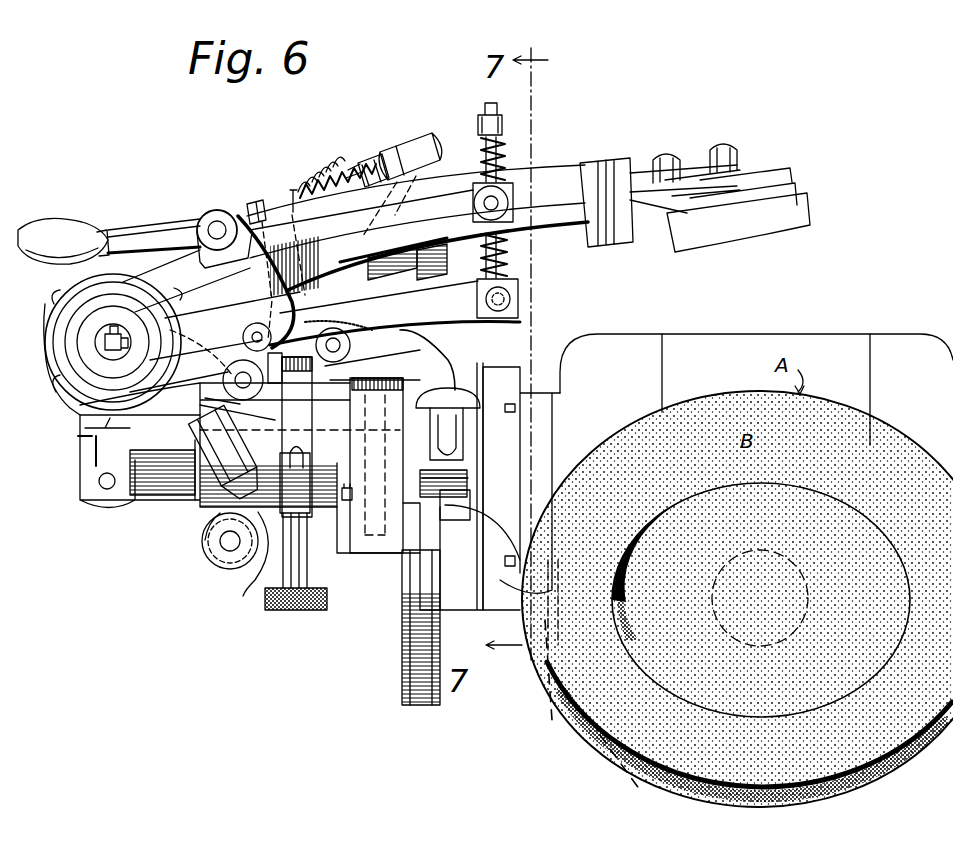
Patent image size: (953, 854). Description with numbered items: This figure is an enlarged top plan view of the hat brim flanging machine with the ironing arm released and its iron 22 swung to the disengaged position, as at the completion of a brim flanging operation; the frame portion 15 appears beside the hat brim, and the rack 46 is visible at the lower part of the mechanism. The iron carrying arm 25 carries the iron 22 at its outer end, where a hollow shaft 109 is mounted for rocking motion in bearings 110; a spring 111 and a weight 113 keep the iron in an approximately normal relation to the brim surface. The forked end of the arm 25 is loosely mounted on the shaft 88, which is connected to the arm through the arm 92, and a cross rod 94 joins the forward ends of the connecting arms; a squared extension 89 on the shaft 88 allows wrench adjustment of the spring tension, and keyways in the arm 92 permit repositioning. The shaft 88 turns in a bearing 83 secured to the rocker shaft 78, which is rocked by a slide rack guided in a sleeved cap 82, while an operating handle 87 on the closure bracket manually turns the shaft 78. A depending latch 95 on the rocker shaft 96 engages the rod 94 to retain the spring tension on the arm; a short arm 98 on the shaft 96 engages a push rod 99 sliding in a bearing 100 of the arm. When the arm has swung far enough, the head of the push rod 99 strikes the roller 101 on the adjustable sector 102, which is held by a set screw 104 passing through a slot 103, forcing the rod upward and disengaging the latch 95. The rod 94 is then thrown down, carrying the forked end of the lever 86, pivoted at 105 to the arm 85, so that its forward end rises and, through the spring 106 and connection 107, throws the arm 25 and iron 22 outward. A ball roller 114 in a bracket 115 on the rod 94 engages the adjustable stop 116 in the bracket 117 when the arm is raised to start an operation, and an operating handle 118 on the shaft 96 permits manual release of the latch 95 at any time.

The frame 15 is at (698, 334).
The iron 22 is at (720, 198).
The iron carrying arm 25 is at (172, 235).
The rack 46 is at (400, 632).
The rocker shaft 78 is at (84, 442).
The sleeved cap 82 is at (385, 555).
The bearing 83 is at (50, 328).
The arm 85 is at (480, 328).
The lever 86 is at (482, 326).
The operating handle 87 is at (470, 390).
The shaft 88 is at (96, 356).
The squared extension 89 is at (108, 330).
The arm 92 is at (215, 368).
The cross rod 94 is at (195, 410).
The latch 95 is at (256, 371).
The rocker shaft 96 is at (208, 230).
The short arm 98 is at (252, 206).
The push rod 99 is at (279, 281).
The bearing 100 is at (300, 292).
The roller 101 is at (365, 353).
The adjustable sector 102 is at (300, 418).
The slot 103 is at (340, 453).
The set screw 104 is at (308, 560).
The pivot 105 is at (370, 344).
The spring 106 is at (505, 145).
The connection 107 is at (518, 175).
The hollow shaft 109 is at (483, 258).
The bearings 110 is at (612, 245).
The spring 111 is at (330, 178).
The weight 113 is at (410, 140).
The ball roller 114 is at (210, 508).
The bracket 115 is at (200, 495).
The adjustable stop 116 is at (220, 558).
The bracket 117 is at (252, 575).
The operating handle 118 is at (60, 235).